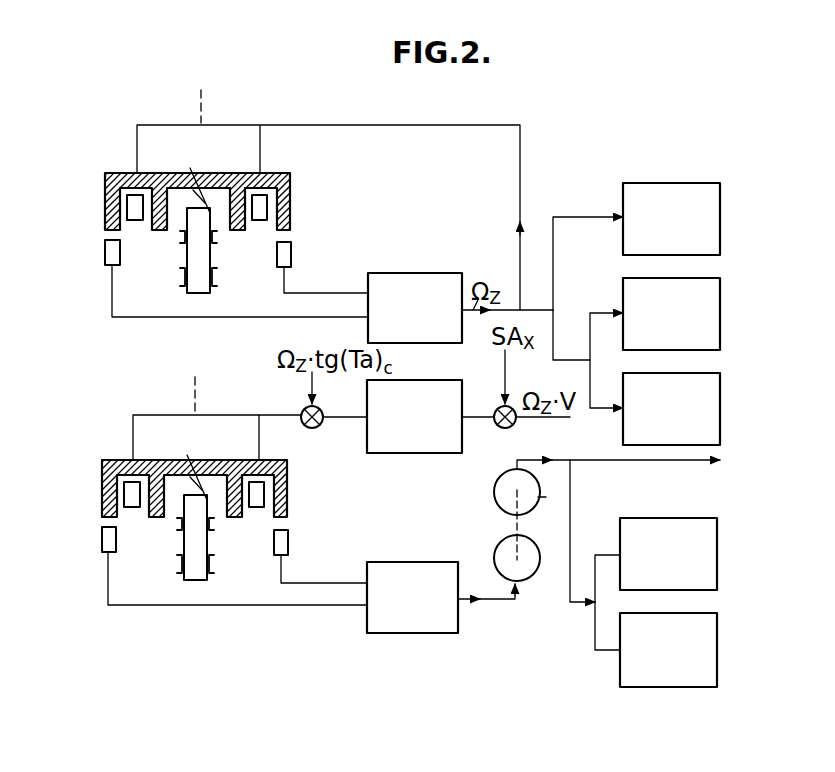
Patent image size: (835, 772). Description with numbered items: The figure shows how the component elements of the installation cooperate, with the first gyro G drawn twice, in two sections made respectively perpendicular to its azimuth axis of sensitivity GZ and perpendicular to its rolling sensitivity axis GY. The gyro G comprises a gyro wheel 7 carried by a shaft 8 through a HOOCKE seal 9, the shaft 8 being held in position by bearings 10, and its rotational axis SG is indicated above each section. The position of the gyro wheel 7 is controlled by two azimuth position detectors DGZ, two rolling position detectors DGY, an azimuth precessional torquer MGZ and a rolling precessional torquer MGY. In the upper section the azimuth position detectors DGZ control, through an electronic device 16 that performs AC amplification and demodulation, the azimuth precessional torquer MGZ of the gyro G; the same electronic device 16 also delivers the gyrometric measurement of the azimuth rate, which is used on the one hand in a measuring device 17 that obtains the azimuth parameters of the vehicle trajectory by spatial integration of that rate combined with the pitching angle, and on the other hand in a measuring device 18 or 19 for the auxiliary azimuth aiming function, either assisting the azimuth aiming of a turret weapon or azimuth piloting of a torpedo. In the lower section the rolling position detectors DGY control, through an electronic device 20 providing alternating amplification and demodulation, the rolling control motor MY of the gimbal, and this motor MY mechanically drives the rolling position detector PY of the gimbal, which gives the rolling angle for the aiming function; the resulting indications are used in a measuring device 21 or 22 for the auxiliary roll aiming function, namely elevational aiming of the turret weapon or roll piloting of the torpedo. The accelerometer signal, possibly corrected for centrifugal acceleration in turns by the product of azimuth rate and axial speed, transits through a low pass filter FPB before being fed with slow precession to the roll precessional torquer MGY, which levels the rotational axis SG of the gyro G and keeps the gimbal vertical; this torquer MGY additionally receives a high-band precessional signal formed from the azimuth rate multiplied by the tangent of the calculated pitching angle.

The gyro wheel 7 is at (226, 185).
The shaft 8 is at (200, 287).
The HOOCKE seal 9 is at (205, 203).
The bearings 10 is at (180, 276).
The electronic device 16 is at (417, 273).
The measuring device 17 is at (664, 192).
The measuring device 18 is at (627, 295).
The measuring device 19 is at (627, 430).
The electronic device 20 is at (410, 622).
The measuring device 21 is at (623, 533).
The measuring device 22 is at (622, 668).
The first gyro G is at (166, 168).
The rotational axis SG is at (201, 234).
The azimuth axis of sensitivity GZ is at (199, 175).
The rolling sensitivity axis GY is at (196, 462).
The azimuth precessional torquer MGZ is at (136, 202).
The rolling precessional torquer MGY is at (133, 489).
The azimuth position detectors DGZ is at (110, 257).
The rolling position detectors DGY is at (107, 544).
The low pass filter FPB is at (417, 380).
The rolling position detector PY is at (606, 485).
The rolling control motor MY is at (495, 556).